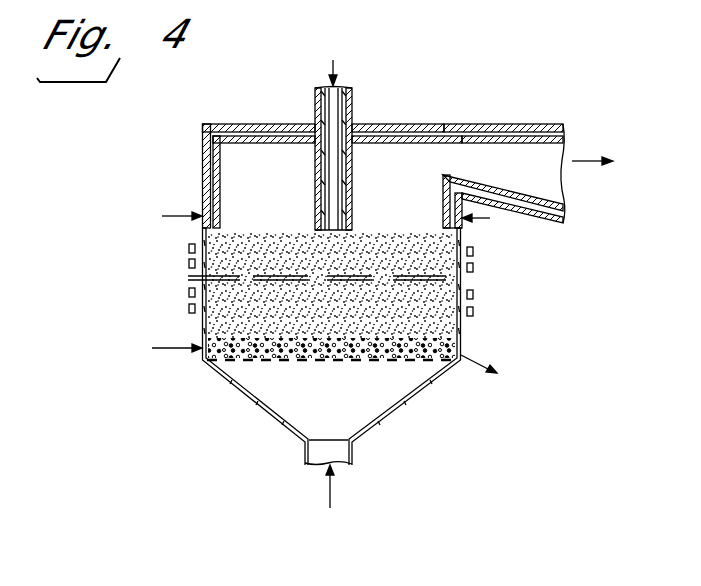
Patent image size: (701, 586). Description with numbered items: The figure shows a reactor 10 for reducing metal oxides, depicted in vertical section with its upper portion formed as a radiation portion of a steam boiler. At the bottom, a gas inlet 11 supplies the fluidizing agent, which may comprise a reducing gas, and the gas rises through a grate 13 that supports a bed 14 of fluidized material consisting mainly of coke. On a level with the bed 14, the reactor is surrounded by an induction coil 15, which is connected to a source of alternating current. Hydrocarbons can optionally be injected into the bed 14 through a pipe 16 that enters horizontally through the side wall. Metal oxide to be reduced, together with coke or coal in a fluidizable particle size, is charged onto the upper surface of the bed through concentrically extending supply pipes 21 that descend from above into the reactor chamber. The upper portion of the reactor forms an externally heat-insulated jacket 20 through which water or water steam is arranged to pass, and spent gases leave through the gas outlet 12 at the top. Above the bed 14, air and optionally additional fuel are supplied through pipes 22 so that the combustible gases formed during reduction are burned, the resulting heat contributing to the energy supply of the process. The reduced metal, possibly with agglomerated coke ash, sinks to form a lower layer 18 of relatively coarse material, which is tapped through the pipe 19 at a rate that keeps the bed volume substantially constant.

The reactor 10 is at (240, 388).
The gas inlet 11 is at (305, 446).
The gas outlet 12 is at (491, 152).
The grate 13 is at (298, 360).
The bed 14 is at (447, 277).
The induction coil 15 is at (188, 292).
The pipe 16 is at (172, 349).
The layer of relatively coarse material 18 is at (410, 352).
The pipe 19 is at (466, 352).
The heat-insulated jacket 20 is at (202, 156).
The supply pipes 21 is at (352, 104).
The pipes 22 is at (180, 214).